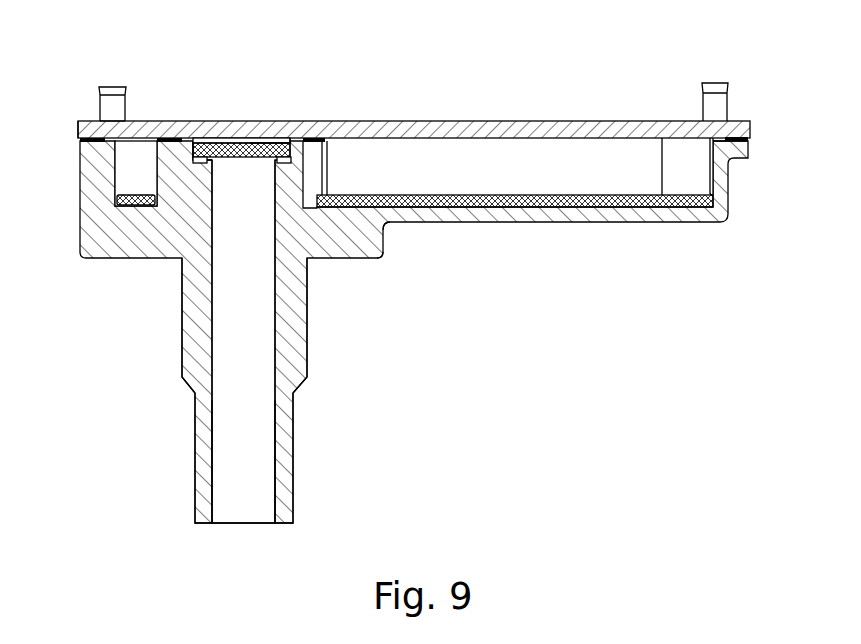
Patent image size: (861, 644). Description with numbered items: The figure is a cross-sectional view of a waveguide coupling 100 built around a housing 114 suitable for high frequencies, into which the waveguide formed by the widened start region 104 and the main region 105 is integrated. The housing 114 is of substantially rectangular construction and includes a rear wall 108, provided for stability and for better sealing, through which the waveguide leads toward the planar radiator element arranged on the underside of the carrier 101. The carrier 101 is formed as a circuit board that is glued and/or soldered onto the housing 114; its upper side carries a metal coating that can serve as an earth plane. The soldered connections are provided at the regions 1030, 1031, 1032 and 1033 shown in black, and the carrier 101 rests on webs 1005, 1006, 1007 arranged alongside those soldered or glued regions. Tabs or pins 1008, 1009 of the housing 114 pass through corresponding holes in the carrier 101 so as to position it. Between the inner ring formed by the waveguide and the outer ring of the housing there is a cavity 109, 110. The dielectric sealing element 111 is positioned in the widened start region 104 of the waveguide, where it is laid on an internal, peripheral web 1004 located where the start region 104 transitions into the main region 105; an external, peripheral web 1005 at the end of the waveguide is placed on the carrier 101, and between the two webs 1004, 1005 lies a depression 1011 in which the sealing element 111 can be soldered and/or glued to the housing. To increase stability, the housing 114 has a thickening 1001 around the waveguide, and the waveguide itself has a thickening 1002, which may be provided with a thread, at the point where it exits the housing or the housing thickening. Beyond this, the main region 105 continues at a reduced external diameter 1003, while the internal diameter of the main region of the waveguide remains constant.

The waveguide coupling 100 is at (518, 353).
The carrier 101 is at (518, 122).
The widened start region of the waveguide 104 is at (223, 139).
The main region of the waveguide 105 is at (252, 482).
The rear wall 108 is at (610, 205).
The cavity 109 is at (127, 167).
The cavity 110 is at (505, 180).
The sealing element 111 is at (270, 140).
The housing 114 is at (100, 228).
The thickening 1001 is at (388, 260).
The thickening 1002 is at (182, 350).
The reduced external diameter 1003 is at (195, 462).
The internal peripheral web 1004 is at (210, 167).
The external peripheral web 1005 is at (190, 140).
The web 1006 is at (107, 122).
The web 1007 is at (720, 141).
The pin 1008 is at (113, 90).
The pin 1009 is at (715, 85).
The depression 1011 is at (200, 162).
The soldered region 1030 is at (78, 126).
The soldered region 1031 is at (172, 137).
The soldered region 1032 is at (738, 133).
The soldered region 1033 is at (312, 138).